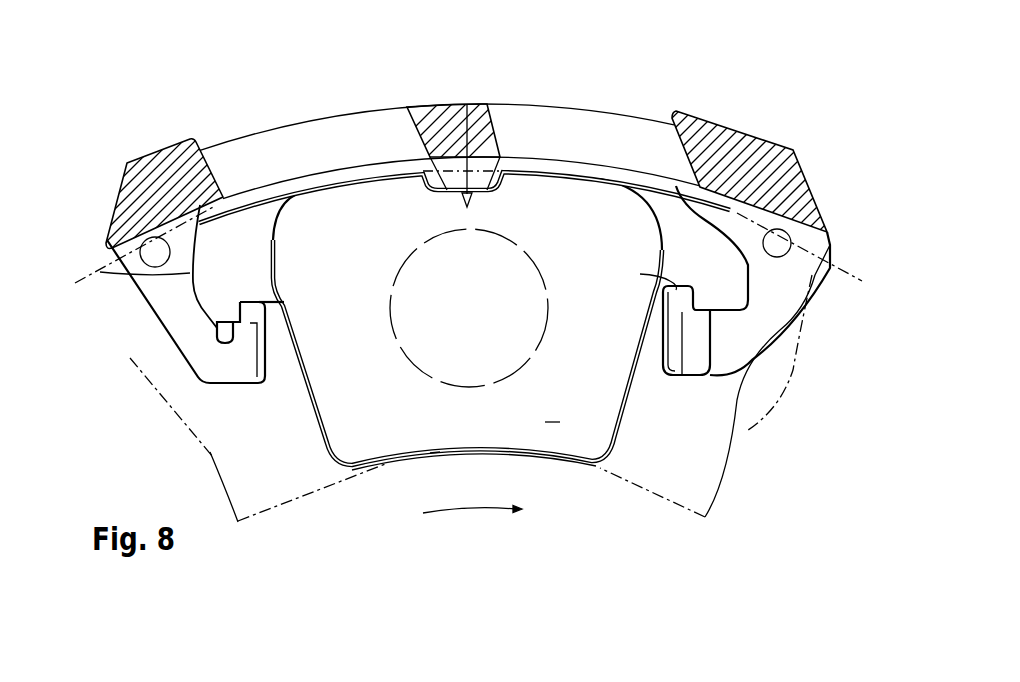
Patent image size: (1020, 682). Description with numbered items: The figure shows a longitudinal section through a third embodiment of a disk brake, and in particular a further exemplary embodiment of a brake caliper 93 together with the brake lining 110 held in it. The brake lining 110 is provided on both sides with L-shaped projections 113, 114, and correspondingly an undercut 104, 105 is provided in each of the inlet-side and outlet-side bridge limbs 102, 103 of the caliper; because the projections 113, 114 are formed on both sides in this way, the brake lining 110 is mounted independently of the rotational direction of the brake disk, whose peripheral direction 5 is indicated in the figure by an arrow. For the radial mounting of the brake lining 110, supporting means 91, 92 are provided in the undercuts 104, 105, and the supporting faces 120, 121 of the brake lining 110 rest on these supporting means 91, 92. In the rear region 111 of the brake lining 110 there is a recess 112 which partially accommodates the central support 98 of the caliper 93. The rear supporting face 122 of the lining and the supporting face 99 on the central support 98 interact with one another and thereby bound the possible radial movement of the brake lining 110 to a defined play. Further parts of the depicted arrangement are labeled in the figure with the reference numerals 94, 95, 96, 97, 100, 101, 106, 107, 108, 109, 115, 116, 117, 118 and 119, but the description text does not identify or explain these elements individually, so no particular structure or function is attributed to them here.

The peripheral direction 5 is at (470, 510).
The supporting means 91 is at (265, 302).
The supporting means 92 is at (640, 274).
The brake caliper 93 is at (750, 101).
The outer edge of carrier bridge 94 is at (369, 112).
The carrier bridge 95 is at (569, 125).
The left carrier arm section 96 is at (157, 178).
The right carrier arm section 97 is at (773, 170).
The central support 98 is at (432, 112).
The supporting face 99 is at (467, 107).
The left bridge portion 100 is at (352, 154).
The right bridge portion 101 is at (608, 151).
The inlet-side bridge limb 102 is at (162, 285).
The outlet-side bridge limb 103 is at (787, 270).
The undercut 104 is at (237, 350).
The undercut 105 is at (788, 372).
The left spring arm 106 is at (207, 302).
The left carrier arm lower edge 107 is at (203, 382).
The right lug inner edge 108 is at (713, 312).
The right guide slot wall 109 is at (747, 282).
The brake lining 110 is at (385, 468).
The rear region 111 is at (552, 425).
The recess 112 is at (506, 168).
The L-shaped projection 113 is at (237, 237).
The L-shaped projection 114 is at (675, 212).
The left mounting hole 115 is at (127, 352).
The left lug side face 116 is at (262, 375).
The right abutment shelf 117 is at (682, 312).
The right carrier edge 118 is at (793, 322).
The lower edge of backing plate 119 is at (427, 457).
The supporting face 120 is at (272, 320).
The supporting face 121 is at (680, 313).
The rear supporting face 122 is at (450, 192).